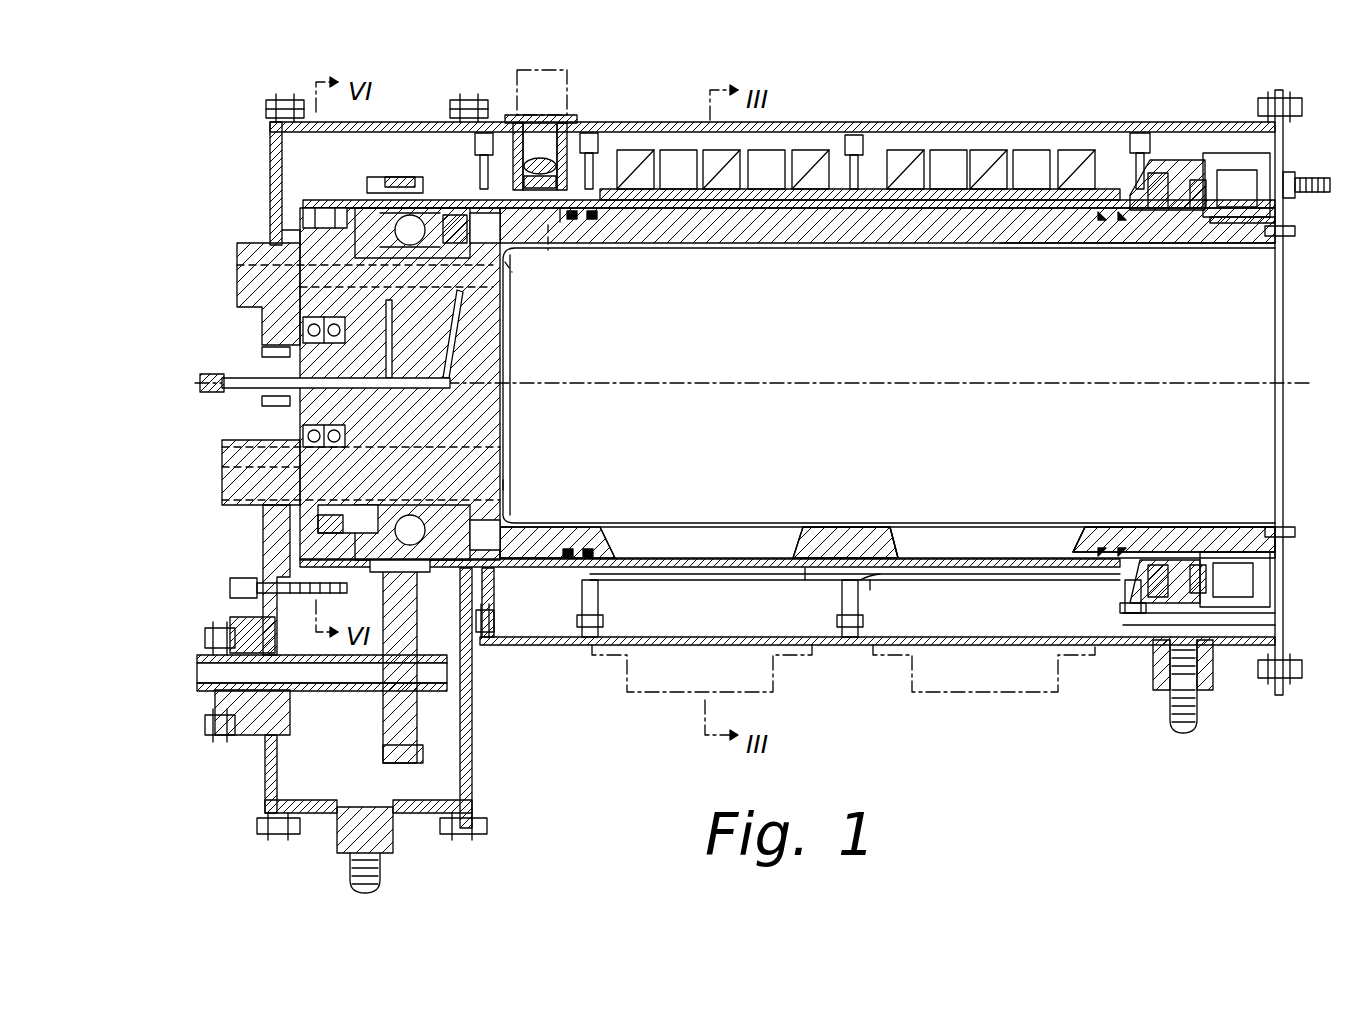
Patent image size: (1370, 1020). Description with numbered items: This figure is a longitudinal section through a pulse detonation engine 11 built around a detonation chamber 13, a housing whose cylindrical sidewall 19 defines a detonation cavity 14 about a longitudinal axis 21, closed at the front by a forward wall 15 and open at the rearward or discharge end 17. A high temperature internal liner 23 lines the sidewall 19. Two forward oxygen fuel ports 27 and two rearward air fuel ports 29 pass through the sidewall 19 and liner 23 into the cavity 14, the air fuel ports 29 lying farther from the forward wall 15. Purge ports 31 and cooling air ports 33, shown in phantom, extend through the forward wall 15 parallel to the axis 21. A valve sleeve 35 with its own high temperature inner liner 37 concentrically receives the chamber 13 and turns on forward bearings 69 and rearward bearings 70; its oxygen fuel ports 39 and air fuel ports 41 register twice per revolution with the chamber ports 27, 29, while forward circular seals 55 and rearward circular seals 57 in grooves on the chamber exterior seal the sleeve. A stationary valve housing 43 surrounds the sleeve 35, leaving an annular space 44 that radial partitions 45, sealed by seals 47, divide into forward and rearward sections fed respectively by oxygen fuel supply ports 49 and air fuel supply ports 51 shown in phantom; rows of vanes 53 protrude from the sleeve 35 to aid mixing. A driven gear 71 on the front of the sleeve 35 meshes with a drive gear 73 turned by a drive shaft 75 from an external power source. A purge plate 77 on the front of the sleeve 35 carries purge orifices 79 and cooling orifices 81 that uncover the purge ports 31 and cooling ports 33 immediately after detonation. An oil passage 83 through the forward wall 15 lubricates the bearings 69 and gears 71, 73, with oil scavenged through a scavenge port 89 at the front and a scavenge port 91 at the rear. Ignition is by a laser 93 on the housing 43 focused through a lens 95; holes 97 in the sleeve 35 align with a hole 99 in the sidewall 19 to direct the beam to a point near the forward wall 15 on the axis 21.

The pulse detonation engine 11 is at (1078, 100).
The detonation chamber 13 is at (862, 248).
The detonation cavity 14 is at (1036, 300).
The forward wall 15 is at (487, 420).
The rearward or discharge end 17 is at (1283, 530).
The sidewall 19 is at (1085, 232).
The longitudinal axis 21 is at (1120, 380).
The internal liner 23 is at (1088, 528).
The oxygen fuel ports 27 is at (800, 540).
The air fuel ports 29 is at (895, 530).
The purge ports 31 is at (495, 484).
The cooling air ports 33 is at (505, 265).
The valve sleeve 35 is at (875, 578).
The inner liner 37 is at (808, 572).
The oxygen fuel ports 39 is at (790, 572).
The air fuel ports 41 is at (1078, 548).
The valve housing 43 is at (1123, 640).
The annular space 44 is at (667, 611).
The radial partitions 45 is at (878, 586).
The seals 47 is at (845, 622).
The oxygen fuel supply ports 49 is at (640, 683).
The air fuel supply ports 51 is at (935, 683).
The vanes 53 is at (905, 160).
The forward circular seals 55 is at (615, 545).
The rearward circular seals 57 is at (1148, 556).
The forward bearings 69 is at (418, 226).
The rearward bearings 70 is at (1250, 178).
The driven gear 71 is at (400, 180).
The drive gear 73 is at (385, 746).
The drive shaft 75 is at (200, 685).
The purge plate 77 is at (270, 558).
The purge orifices 79 is at (222, 470).
The cooling orifices 81 is at (268, 320).
The oil passage 83 is at (262, 405).
The scavenge port 89 is at (393, 872).
The scavenge port 91 is at (1200, 708).
The laser 93 is at (580, 86).
The lens 95 is at (537, 150).
The holes 97 is at (560, 215).
The hole 99 is at (548, 230).